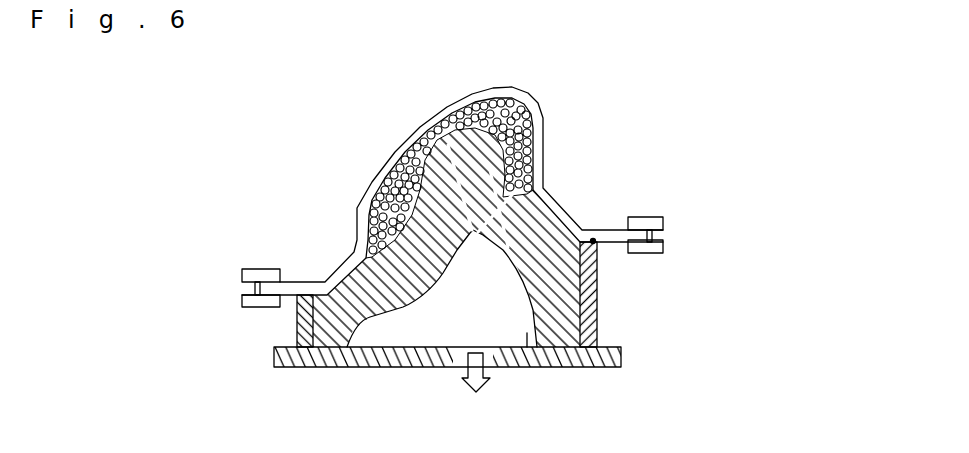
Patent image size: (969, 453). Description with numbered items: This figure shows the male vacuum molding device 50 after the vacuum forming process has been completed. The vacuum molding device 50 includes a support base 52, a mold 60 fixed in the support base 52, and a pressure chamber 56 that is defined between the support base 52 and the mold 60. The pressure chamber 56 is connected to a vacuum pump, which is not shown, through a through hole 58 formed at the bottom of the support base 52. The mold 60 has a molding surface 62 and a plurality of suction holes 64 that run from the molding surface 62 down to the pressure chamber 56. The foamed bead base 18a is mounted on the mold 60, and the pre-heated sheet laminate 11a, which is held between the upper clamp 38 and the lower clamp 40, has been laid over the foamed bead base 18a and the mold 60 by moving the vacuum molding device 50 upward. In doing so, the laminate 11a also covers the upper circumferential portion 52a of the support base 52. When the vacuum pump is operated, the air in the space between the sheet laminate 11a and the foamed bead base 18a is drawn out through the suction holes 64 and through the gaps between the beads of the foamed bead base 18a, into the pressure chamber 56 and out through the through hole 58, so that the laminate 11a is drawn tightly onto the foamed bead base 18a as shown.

The sheet laminate 11a is at (528, 107).
The foamed bead base 18a is at (487, 110).
The vacuum molding device 50 is at (571, 173).
The mold 60 is at (550, 237).
The molding surface 62 is at (380, 180).
The suction holes 64 is at (372, 222).
The upper clamp 38 is at (246, 270).
The lower clamp 40 is at (242, 300).
The support base 52 is at (598, 302).
The upper circumferential portion 52a is at (597, 244).
The pressure chamber 56 is at (530, 352).
The through hole 58 is at (490, 355).